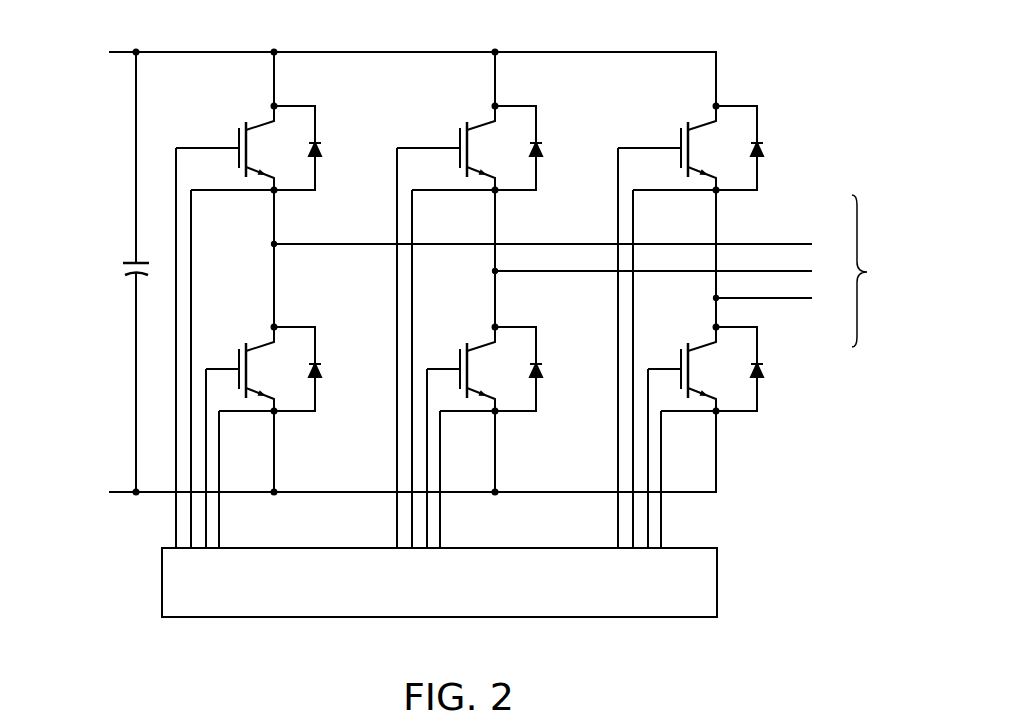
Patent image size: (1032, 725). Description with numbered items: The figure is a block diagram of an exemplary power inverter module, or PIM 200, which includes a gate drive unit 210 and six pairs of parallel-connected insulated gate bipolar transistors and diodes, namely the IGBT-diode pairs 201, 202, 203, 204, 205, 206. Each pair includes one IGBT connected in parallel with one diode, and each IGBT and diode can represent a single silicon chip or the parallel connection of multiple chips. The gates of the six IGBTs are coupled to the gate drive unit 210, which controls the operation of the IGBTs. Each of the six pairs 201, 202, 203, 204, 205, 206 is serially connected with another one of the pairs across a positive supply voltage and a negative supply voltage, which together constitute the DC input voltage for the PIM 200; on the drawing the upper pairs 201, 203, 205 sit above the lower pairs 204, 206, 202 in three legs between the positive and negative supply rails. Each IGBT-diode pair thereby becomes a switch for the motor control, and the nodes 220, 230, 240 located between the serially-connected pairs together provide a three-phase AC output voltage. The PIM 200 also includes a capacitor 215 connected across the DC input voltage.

The PIM 200 is at (783, 70).
The IGBT-diode pair 201 is at (258, 98).
The IGBT-diode pair 202 is at (692, 315).
The IGBT-diode pair 203 is at (470, 98).
The IGBT-diode pair 204 is at (260, 315).
The IGBT-diode pair 205 is at (693, 98).
The IGBT-diode pair 206 is at (471, 315).
The gate drive unit 210 is at (718, 575).
The capacitor 215 is at (120, 265).
The node 220 is at (775, 243).
The node 230 is at (777, 272).
The node 240 is at (775, 299).